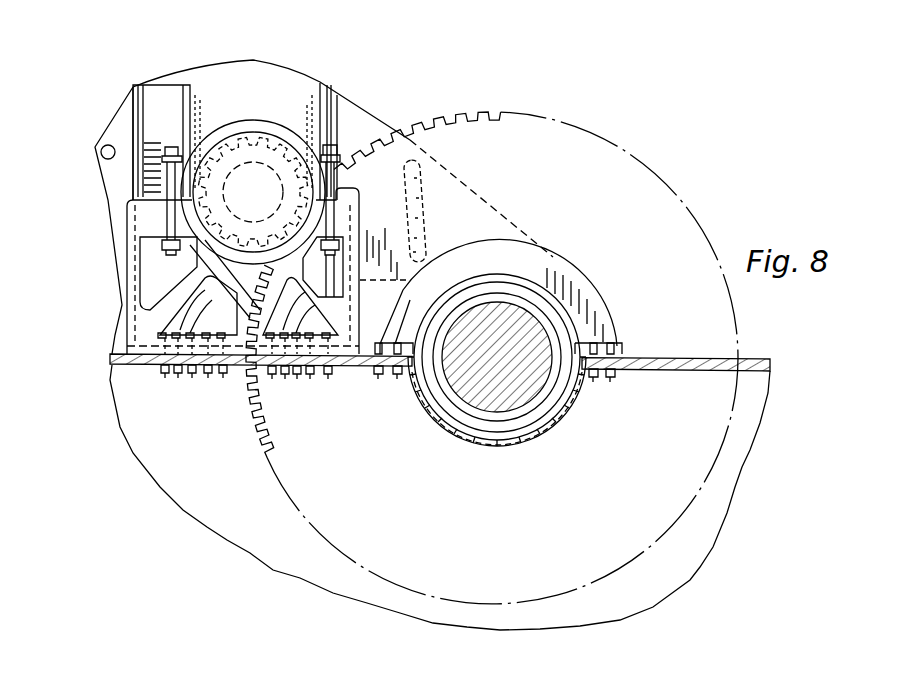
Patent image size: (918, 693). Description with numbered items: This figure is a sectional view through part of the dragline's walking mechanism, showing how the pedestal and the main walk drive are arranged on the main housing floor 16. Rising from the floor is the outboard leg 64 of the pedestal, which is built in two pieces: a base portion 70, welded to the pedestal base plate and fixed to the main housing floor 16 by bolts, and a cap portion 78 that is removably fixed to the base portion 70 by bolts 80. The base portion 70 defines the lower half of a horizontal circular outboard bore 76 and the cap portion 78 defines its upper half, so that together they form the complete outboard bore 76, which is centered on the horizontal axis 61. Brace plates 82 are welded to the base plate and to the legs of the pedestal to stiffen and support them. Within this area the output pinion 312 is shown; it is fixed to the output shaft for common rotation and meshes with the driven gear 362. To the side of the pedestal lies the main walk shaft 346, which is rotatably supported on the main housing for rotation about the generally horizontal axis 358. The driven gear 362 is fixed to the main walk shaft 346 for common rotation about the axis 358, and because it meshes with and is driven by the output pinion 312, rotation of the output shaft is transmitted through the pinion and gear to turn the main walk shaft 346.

The main housing floor 16 is at (762, 358).
The horizontal axis 61 is at (253, 196).
The outboard leg 64 is at (140, 214).
The base portion 70 is at (132, 318).
The outboard bore 76 is at (237, 140).
The cap portion 78 is at (207, 130).
The bolts 80 is at (172, 149).
The brace plates 82 is at (157, 93).
The output pinion 312 is at (282, 145).
The main walk shaft 346 is at (465, 392).
The horizontal axis 358 is at (497, 357).
The driven gear 362 is at (457, 115).